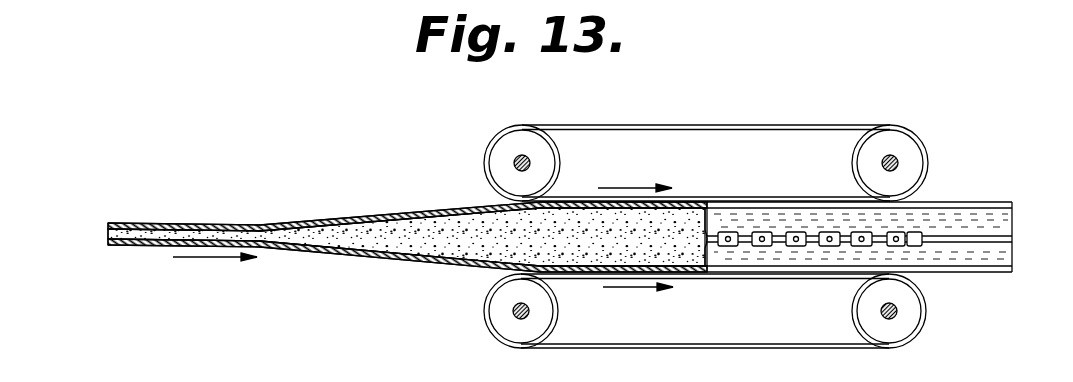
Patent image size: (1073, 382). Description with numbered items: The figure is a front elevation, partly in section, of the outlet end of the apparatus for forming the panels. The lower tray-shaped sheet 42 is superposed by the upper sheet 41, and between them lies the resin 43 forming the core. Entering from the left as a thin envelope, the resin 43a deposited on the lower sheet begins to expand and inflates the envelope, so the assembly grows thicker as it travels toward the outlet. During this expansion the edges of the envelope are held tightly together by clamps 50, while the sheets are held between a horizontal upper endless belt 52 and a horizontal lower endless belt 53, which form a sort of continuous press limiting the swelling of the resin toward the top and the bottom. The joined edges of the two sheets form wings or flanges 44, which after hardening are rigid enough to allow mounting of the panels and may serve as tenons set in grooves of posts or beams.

The upper sheet 41 is at (340, 218).
The lower tray-shaped sheet 42 is at (337, 252).
The resin 43 is at (520, 237).
The resin for the core 43a is at (156, 229).
The wings or flanges 44 is at (977, 222).
The clamps 50 is at (825, 248).
The upper endless belt 52 is at (764, 124).
The lower endless belt 53 is at (773, 350).